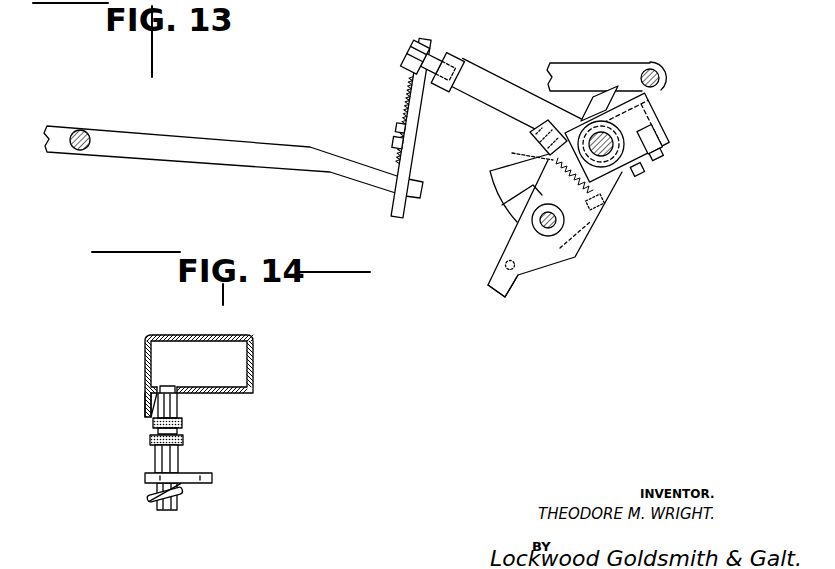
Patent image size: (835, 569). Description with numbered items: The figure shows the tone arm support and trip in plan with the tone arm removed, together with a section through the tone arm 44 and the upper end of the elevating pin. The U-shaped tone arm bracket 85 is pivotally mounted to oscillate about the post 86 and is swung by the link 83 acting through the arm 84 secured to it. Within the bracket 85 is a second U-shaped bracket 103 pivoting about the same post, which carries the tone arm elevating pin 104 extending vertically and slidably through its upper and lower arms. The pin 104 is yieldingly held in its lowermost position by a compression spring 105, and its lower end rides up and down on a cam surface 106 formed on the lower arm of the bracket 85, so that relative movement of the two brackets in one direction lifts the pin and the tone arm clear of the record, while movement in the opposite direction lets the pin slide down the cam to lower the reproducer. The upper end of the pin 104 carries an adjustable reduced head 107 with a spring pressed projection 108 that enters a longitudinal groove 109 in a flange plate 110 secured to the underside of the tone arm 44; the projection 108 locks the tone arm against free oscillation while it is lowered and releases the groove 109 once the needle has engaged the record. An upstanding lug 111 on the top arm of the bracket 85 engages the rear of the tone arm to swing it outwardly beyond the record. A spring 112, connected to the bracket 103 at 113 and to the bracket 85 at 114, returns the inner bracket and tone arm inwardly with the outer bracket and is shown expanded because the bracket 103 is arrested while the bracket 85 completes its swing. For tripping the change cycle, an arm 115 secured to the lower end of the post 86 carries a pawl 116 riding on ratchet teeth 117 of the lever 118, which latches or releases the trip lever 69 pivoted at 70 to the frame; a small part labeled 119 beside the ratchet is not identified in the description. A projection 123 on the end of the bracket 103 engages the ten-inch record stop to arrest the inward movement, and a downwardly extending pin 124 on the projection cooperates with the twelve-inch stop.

In FIG. 14, the tone arm 44 is at (243, 338).
In FIG. 13, the trip lever 69 is at (334, 163).
In FIG. 13, the pivot point 70 is at (91, 133).
In FIG. 13, the link 83 is at (564, 70).
In FIG. 13, the arm 84 is at (666, 88).
In FIG. 13, the tone arm bracket 85 is at (672, 135).
In FIG. 13, the post 86 is at (608, 155).
In FIG. 13, the inner bracket 103 is at (578, 259).
In FIG. 14, the inner bracket 103 is at (201, 484).
In FIG. 13, the tone arm elevating pin 104 is at (549, 236).
In FIG. 14, the tone arm elevating pin 104 is at (174, 458).
In FIG. 14, the compression spring 105 is at (150, 494).
In FIG. 13, the cam surface 106 is at (509, 210).
In FIG. 14, the adjustable reduced head 107 is at (178, 409).
In FIG. 14, the spring pressed projection 108 is at (174, 390).
In FIG. 14, the longitudinal groove 109 is at (161, 387).
In FIG. 14, the flange plate 110 is at (145, 405).
In FIG. 13, the upstanding lug 111 is at (657, 158).
In FIG. 13, the spring 112 is at (520, 153).
In FIG. 13, the spring connection point 113 is at (603, 203).
In FIG. 13, the spring connection point 114 is at (528, 130).
In FIG. 13, the arm 115 is at (478, 73).
In FIG. 13, the pawl 116 is at (437, 57).
In FIG. 13, the ratchet teeth 117 is at (405, 96).
In FIG. 13, the lever 118 is at (398, 146).
In FIG. 13, the nut 119 is at (402, 125).
In FIG. 13, the projection 123 is at (490, 288).
In FIG. 13, the downwardly extending pin 124 is at (509, 270).